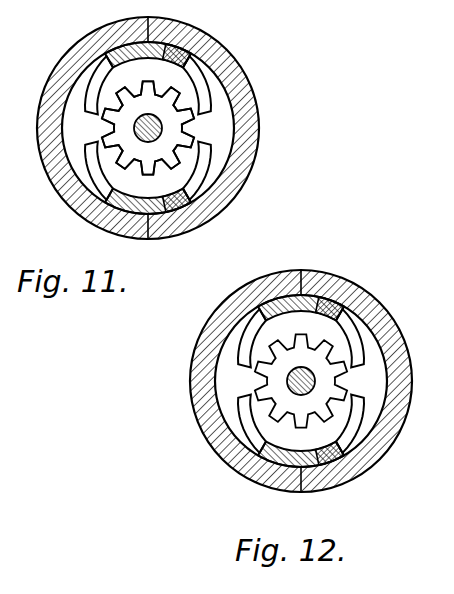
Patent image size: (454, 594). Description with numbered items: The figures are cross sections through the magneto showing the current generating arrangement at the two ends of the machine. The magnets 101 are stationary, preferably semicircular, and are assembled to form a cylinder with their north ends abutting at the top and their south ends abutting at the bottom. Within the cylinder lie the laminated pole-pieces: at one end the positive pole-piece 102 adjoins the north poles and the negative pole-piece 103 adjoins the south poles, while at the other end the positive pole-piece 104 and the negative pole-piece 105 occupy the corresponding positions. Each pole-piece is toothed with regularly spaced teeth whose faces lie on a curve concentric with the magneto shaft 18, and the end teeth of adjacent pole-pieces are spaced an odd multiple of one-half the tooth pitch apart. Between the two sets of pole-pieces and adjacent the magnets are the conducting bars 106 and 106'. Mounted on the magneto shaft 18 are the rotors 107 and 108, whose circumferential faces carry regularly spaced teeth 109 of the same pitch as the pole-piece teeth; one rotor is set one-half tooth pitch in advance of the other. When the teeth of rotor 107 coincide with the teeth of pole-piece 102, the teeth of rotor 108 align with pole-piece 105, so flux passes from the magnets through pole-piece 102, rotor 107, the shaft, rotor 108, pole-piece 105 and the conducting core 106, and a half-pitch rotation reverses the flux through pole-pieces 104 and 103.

In FIG. 11, the magneto shaft 18 is at (131, 127).
In FIG. 11, the magnets 101 is at (109, 0).
In FIG. 12, the magnets 101 is at (304, 383).
In FIG. 11, the pole-piece 102 is at (148, 59).
In FIG. 11, the pole-piece 103 is at (148, 195).
In FIG. 12, the pole-piece 104 is at (301, 313).
In FIG. 12, the pole-piece 105 is at (301, 448).
In FIG. 12, the conducting bar 106 is at (364, 278).
In FIG. 11, the conducting bar 106' is at (223, 211).
In FIG. 12, the conducting bar 106' is at (367, 476).
In FIG. 11, the rotor 107 is at (168, 127).
In FIG. 12, the rotor 108 is at (321, 380).
In FIG. 11, the teeth 109 is at (183, 120).
In FIG. 12, the teeth 109 is at (291, 381).